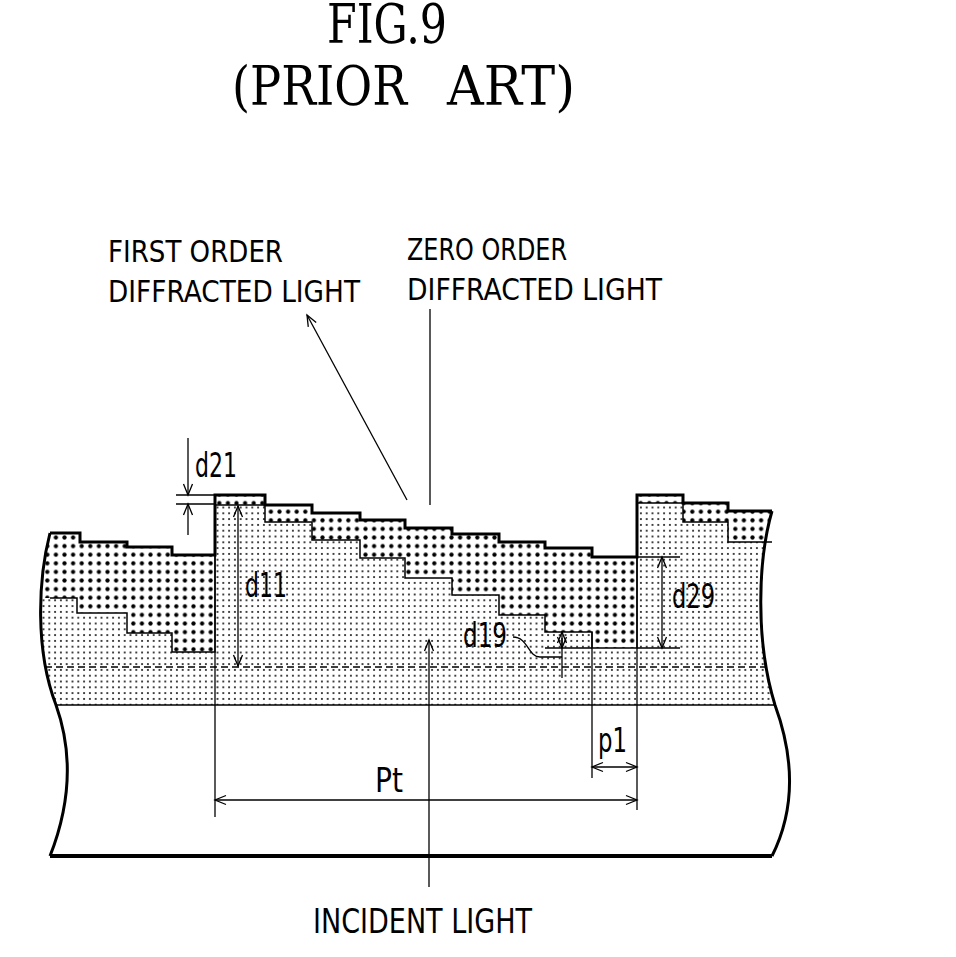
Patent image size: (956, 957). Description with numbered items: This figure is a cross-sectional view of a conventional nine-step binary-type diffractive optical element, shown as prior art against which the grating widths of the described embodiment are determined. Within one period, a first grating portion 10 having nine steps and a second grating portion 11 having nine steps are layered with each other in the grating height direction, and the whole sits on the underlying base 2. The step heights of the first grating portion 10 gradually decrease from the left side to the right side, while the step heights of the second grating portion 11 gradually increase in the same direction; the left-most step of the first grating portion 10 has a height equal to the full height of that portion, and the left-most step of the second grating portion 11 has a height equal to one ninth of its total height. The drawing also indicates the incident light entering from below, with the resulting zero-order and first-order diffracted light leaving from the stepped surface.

The substrate 2 is at (767, 778).
The first grating portion 10 is at (733, 624).
The second grating portion 11 is at (97, 542).